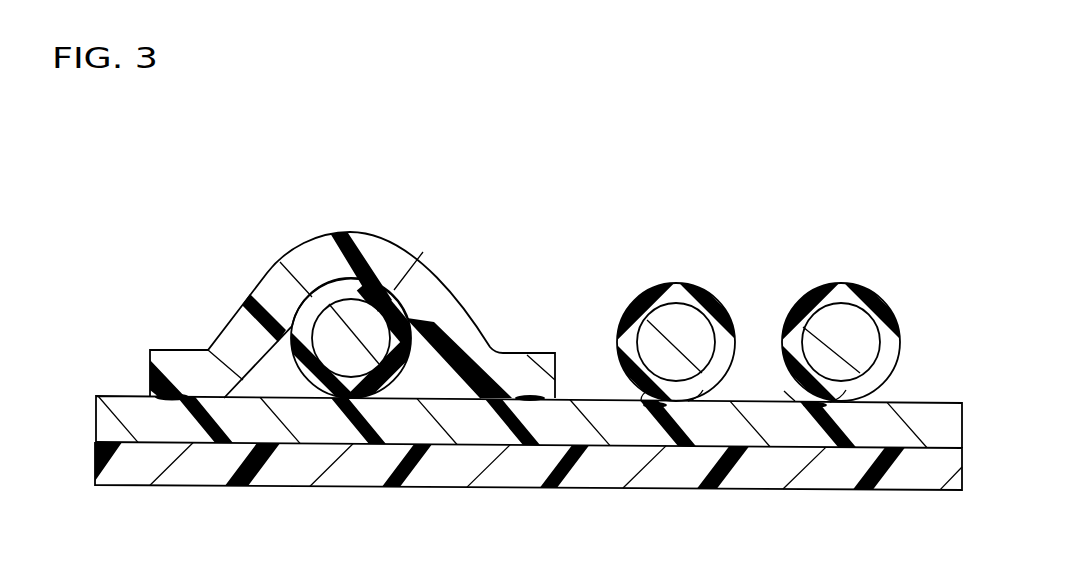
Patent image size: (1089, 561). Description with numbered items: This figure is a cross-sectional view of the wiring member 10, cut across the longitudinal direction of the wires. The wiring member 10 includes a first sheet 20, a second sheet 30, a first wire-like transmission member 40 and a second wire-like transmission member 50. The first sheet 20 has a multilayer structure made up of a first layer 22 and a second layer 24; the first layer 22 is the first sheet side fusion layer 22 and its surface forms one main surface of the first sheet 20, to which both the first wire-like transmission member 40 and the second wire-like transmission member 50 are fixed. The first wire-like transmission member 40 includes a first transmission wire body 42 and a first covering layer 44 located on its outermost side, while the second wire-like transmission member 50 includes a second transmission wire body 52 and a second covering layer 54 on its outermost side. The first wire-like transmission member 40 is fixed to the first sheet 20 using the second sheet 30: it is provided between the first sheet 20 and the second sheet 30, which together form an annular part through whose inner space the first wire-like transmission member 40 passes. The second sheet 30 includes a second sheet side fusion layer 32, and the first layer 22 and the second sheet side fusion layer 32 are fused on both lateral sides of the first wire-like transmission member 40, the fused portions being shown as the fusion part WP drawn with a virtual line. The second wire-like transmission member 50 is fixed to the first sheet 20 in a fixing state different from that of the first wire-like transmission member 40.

The wiring member 10 is at (838, 151).
The first sheet 20 is at (575, 443).
The first layer 22 is at (965, 425).
The second layer 24 is at (553, 466).
The second sheet 30 is at (352, 284).
The second sheet side fusion layer 32 is at (345, 233).
The first wire-like transmission member 40 is at (400, 328).
The first transmission wire body 42 is at (362, 313).
The first covering layer 44 is at (393, 316).
The second wire-like transmission member 50 is at (761, 300).
The second transmission wire body 52 is at (660, 330).
The second covering layer 54 is at (693, 297).
The fusion part WP is at (797, 378).